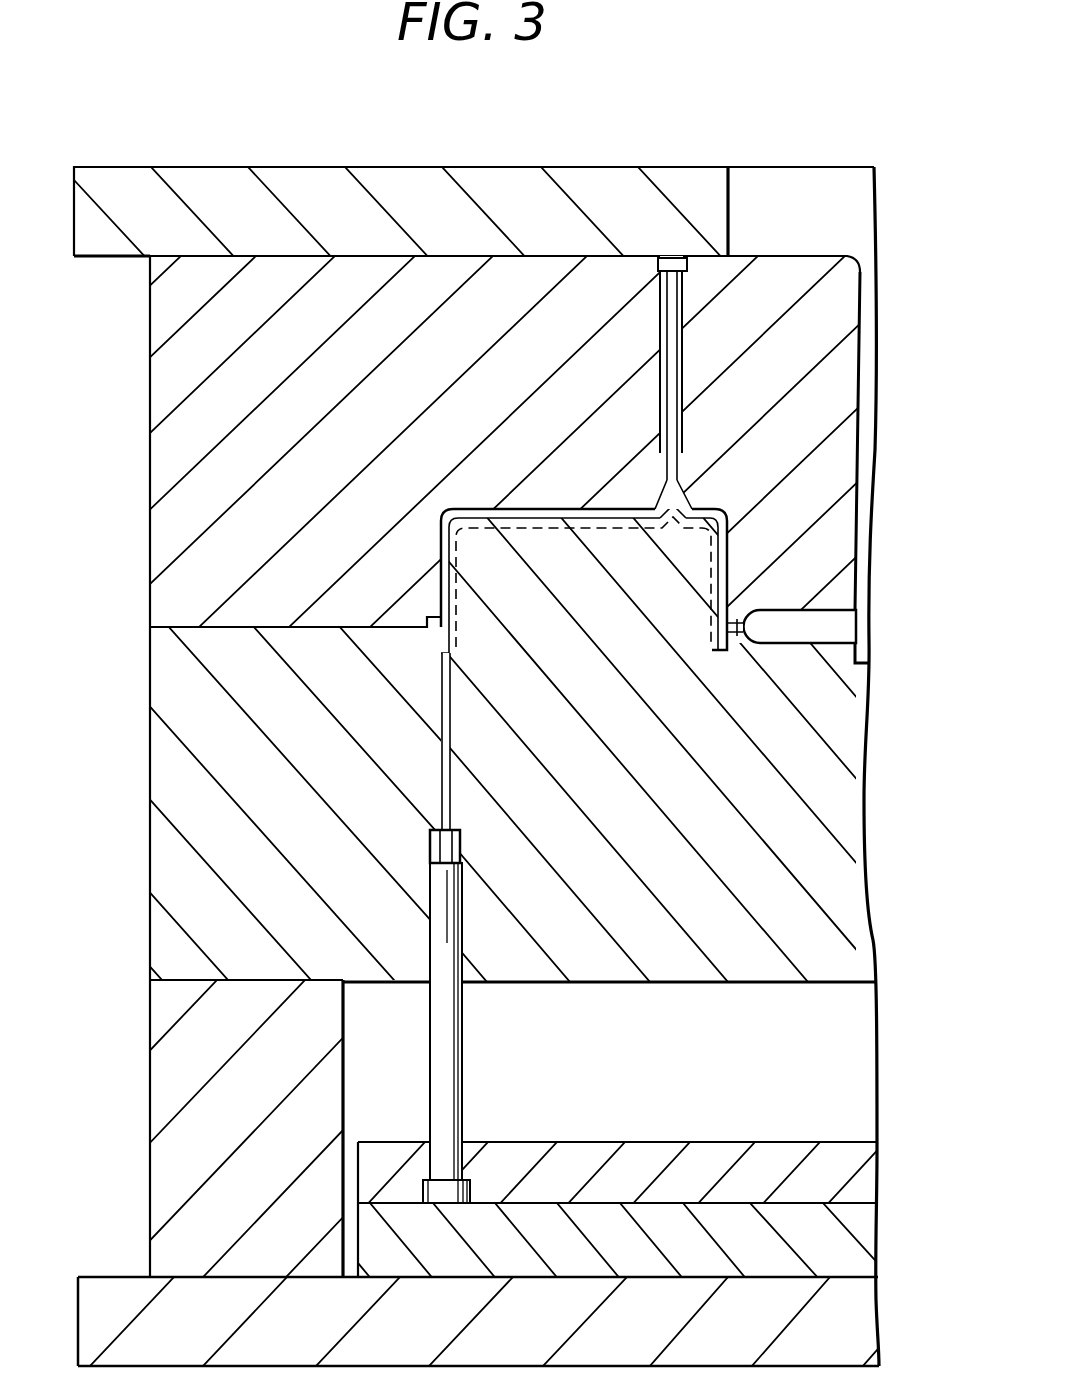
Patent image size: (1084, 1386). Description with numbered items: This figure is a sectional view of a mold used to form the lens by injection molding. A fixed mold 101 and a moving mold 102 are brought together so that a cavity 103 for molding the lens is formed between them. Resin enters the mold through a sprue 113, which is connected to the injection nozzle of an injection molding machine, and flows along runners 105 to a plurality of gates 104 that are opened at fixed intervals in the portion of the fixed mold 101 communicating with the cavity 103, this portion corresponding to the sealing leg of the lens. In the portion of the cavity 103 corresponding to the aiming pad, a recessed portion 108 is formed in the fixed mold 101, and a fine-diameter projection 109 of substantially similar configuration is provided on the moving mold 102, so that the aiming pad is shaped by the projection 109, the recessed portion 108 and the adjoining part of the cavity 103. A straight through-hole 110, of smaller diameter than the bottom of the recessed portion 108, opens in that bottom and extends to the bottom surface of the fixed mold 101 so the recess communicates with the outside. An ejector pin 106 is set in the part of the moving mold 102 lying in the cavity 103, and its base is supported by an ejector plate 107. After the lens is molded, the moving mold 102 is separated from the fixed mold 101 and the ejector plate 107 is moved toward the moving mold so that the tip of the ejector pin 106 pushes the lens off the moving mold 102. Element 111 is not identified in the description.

The fixed mold 101 is at (160, 470).
The moving mold 102 is at (175, 886).
The cavity 103 is at (727, 568).
The gate 104 is at (738, 643).
The runner 105 is at (833, 630).
The ejector pin 106 is at (460, 790).
The ejector plate 107 is at (565, 1167).
The recessed portion 108 is at (690, 490).
The fine-diameter projection 109 is at (673, 515).
The straight through-hole 110 is at (667, 335).
The sprue bushing 111 is at (675, 348).
The sprue 113 is at (868, 410).